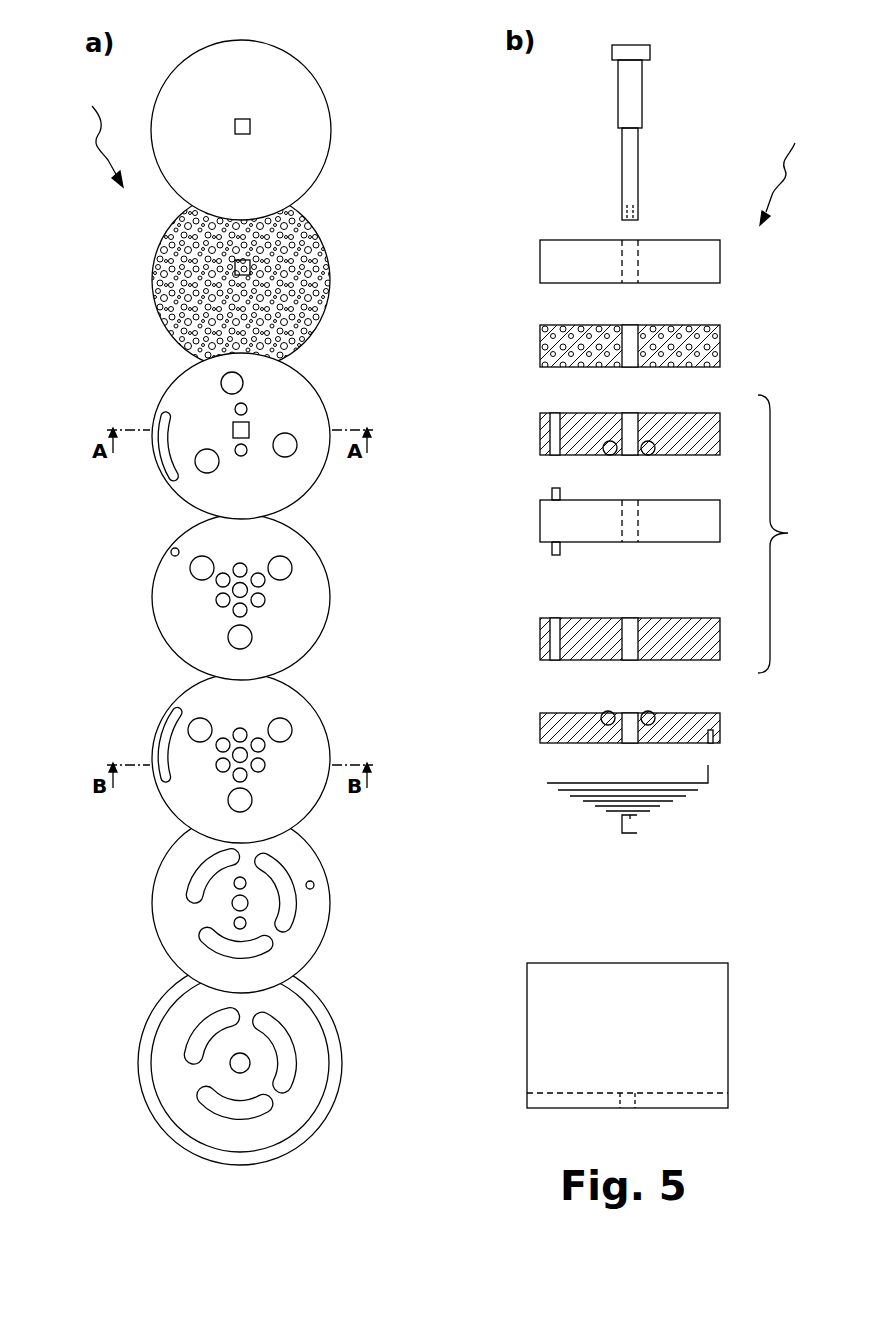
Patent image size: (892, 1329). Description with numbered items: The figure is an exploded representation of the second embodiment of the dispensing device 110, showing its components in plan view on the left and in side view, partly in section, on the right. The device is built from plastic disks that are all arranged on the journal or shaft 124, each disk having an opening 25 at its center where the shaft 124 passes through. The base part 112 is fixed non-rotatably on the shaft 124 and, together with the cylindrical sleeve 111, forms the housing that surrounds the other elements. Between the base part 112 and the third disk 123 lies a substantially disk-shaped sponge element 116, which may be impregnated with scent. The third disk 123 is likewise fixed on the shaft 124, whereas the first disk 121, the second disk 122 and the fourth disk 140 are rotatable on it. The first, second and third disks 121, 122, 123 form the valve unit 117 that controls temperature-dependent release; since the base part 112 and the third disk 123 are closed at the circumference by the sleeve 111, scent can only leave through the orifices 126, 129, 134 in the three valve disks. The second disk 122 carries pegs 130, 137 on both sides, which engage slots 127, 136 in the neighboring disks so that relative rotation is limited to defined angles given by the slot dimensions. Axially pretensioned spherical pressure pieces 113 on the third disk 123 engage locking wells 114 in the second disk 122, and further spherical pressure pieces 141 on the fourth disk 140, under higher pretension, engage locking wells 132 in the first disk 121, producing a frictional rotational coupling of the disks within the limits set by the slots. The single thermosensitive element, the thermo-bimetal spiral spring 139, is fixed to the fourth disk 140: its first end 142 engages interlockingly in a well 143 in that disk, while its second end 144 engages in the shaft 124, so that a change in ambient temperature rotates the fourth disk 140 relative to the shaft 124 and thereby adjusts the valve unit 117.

The central opening / hole 25 is at (250, 121).
The dispensing device 110 is at (443, 161).
The cylindrical sleeve 111 is at (342, 1078).
The base part 112 is at (320, 86).
The spherical pressure pieces 113 is at (236, 410).
The locking wells 114 is at (222, 602).
The sponge element 116 is at (318, 232).
The valve unit 117 is at (796, 534).
The first disk 121 is at (323, 788).
The second disk 122 is at (322, 620).
The third disk 123 is at (322, 467).
The shaft 124 is at (642, 95).
The orifice 126 is at (231, 382).
The slot 127 is at (176, 473).
The orifice 129 is at (200, 570).
The peg 130 is at (170, 551).
The locking wells 132 is at (222, 766).
The orifice 134 is at (200, 728).
The slot 136 is at (165, 742).
The peg 137 is at (552, 549).
The thermo-bimetal spiral spring 139 is at (660, 800).
The fourth disk 140 is at (323, 940).
The spherical pressure pieces 141 is at (232, 883).
The first end 142 is at (710, 775).
The well 143 is at (710, 745).
The second end 144 is at (630, 835).